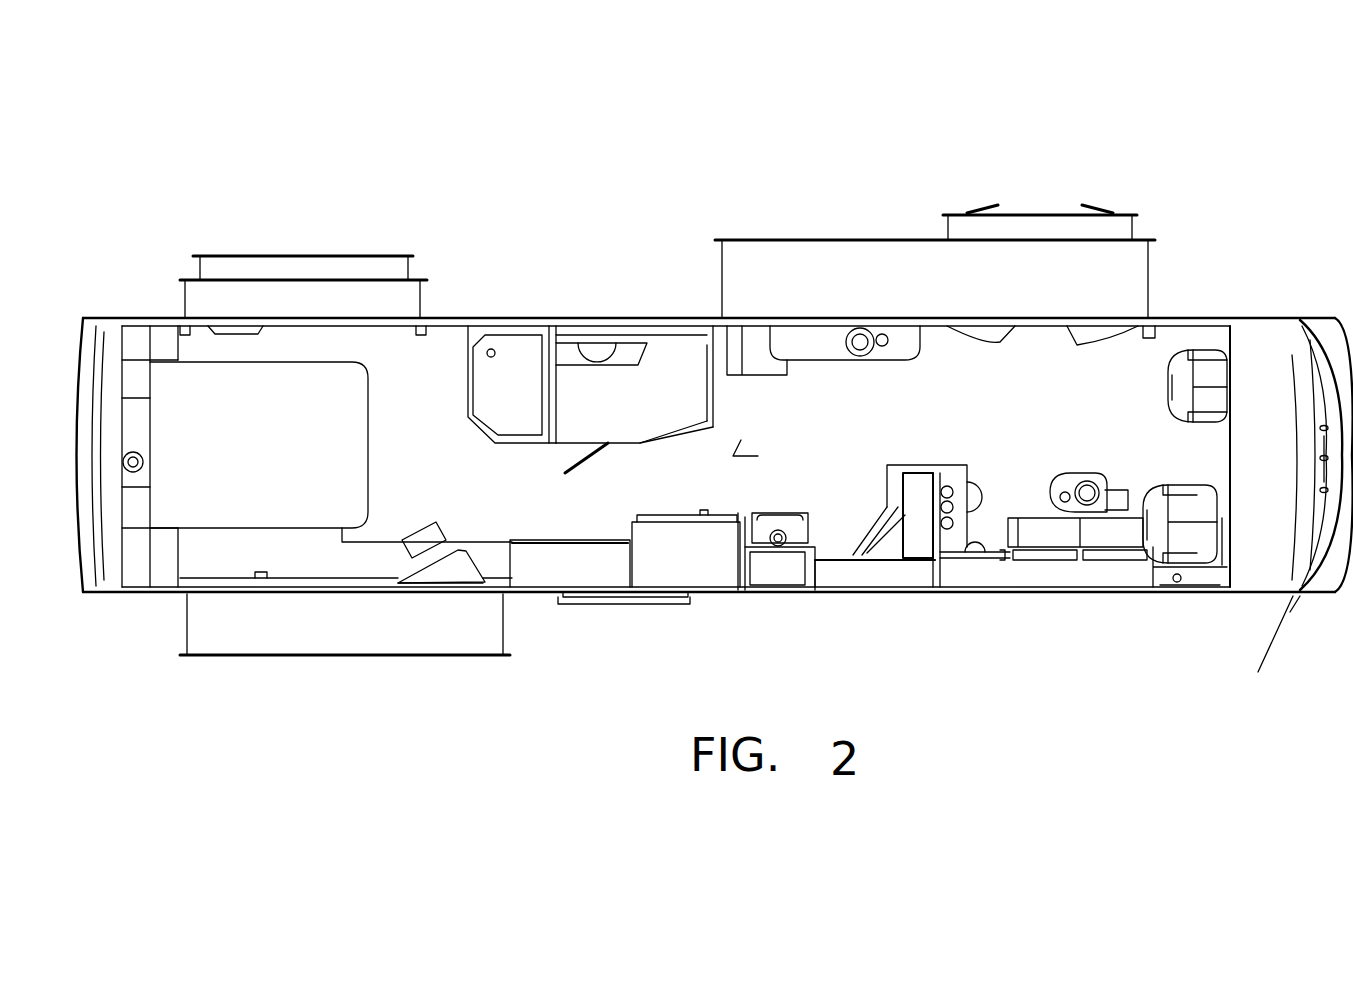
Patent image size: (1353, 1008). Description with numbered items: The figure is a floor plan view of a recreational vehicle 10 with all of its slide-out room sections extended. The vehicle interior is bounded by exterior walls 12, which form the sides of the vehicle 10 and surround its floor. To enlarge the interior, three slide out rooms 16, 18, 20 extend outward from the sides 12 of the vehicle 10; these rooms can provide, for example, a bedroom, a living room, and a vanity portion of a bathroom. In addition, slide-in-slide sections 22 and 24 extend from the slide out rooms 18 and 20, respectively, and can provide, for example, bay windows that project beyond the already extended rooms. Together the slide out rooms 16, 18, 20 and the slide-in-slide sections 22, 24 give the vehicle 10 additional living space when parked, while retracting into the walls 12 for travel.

The recreational vehicle 10 is at (1057, 668).
The exterior walls 12 is at (775, 598).
The slide out room 16 is at (197, 627).
The slide out room 18 is at (185, 297).
The slide out room 20 is at (1148, 281).
The slide-in-slide section 22 is at (238, 252).
The slide-in-slide section 24 is at (1133, 230).